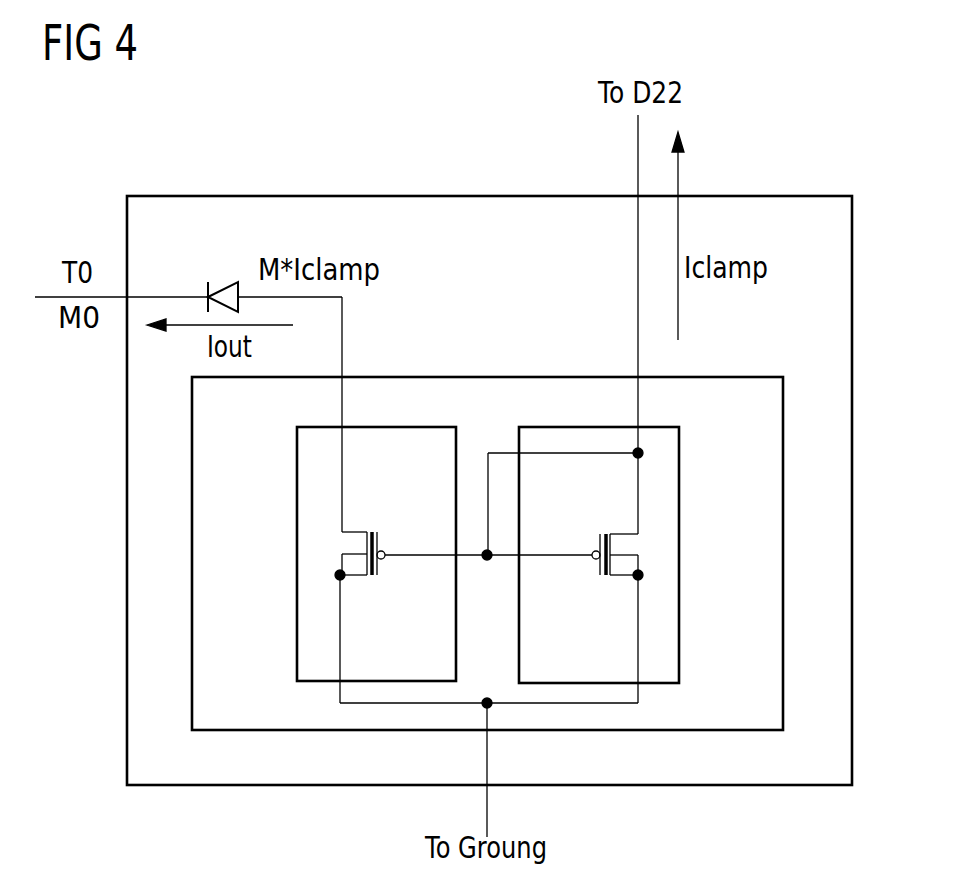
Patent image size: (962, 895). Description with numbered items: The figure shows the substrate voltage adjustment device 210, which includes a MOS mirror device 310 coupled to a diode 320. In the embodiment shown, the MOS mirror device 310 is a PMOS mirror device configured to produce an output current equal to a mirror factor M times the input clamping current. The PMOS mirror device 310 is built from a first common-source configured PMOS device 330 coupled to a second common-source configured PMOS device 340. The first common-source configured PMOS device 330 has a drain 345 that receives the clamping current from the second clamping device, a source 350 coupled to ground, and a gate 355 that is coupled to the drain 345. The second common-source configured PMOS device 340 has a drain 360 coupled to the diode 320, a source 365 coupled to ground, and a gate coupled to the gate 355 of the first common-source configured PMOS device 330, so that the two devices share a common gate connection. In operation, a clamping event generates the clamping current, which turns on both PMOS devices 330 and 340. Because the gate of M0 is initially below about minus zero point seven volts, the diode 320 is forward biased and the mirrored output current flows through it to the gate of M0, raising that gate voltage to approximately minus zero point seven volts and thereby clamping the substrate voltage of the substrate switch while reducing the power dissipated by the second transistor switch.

The substrate voltage adjustment device 210 is at (828, 113).
The MOS mirror device 310 is at (488, 377).
The diode 320 is at (215, 285).
The first common-source configured PMOS device 330 is at (680, 556).
The second common-source configured PMOS device 340 is at (296, 553).
The drain 345 is at (636, 458).
The source 350 is at (623, 578).
The gate 355 is at (590, 562).
The drain 360 is at (352, 531).
The source 365 is at (355, 578).